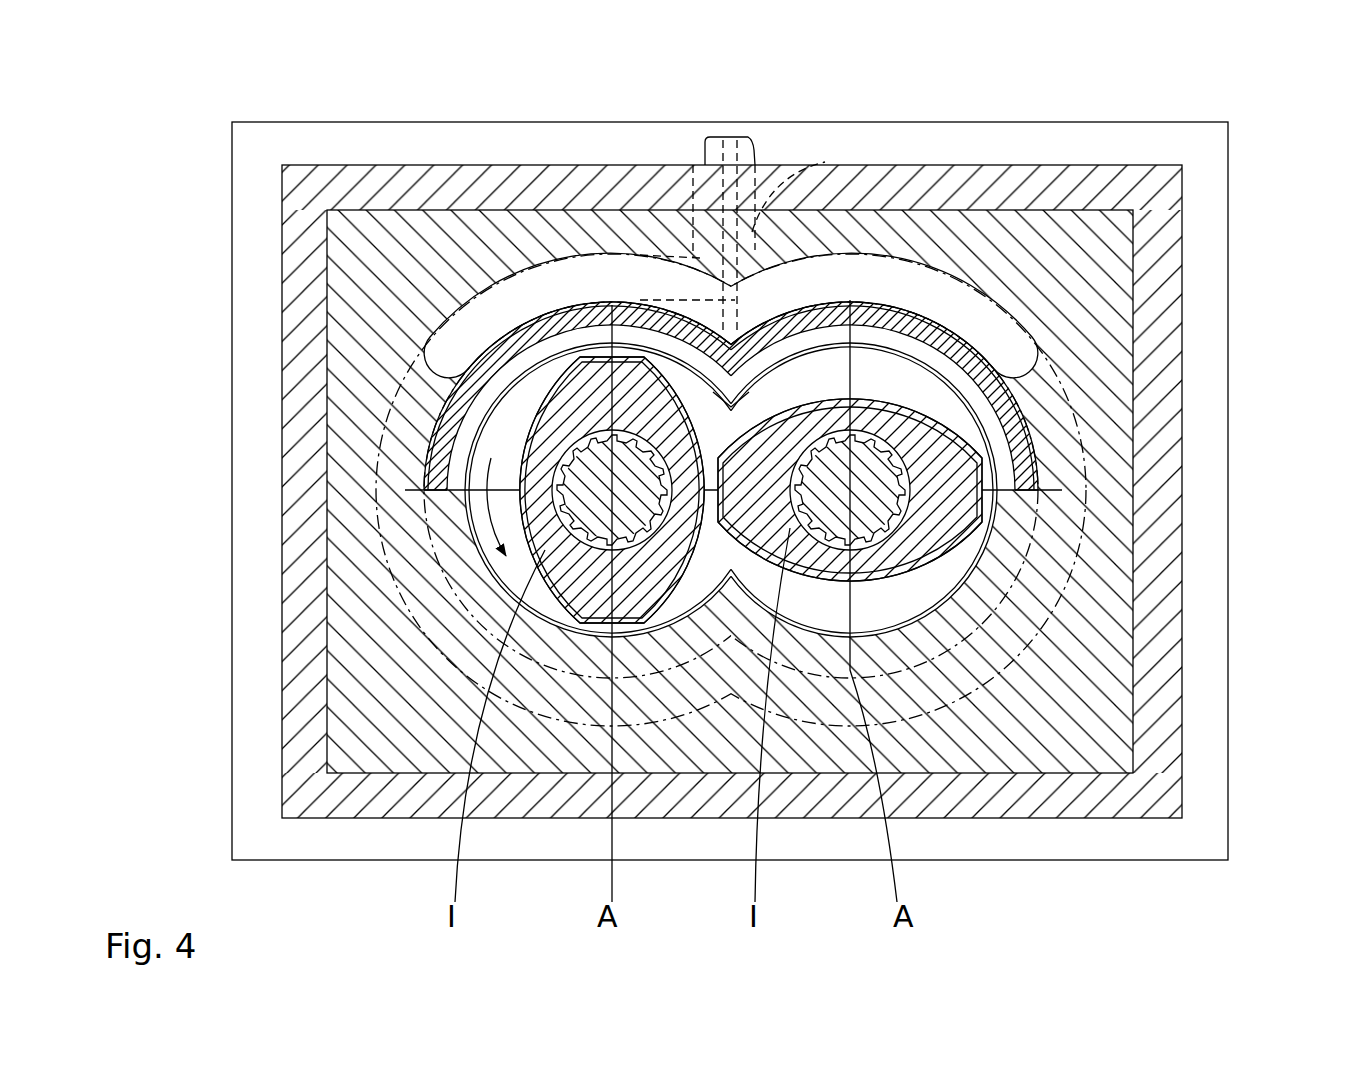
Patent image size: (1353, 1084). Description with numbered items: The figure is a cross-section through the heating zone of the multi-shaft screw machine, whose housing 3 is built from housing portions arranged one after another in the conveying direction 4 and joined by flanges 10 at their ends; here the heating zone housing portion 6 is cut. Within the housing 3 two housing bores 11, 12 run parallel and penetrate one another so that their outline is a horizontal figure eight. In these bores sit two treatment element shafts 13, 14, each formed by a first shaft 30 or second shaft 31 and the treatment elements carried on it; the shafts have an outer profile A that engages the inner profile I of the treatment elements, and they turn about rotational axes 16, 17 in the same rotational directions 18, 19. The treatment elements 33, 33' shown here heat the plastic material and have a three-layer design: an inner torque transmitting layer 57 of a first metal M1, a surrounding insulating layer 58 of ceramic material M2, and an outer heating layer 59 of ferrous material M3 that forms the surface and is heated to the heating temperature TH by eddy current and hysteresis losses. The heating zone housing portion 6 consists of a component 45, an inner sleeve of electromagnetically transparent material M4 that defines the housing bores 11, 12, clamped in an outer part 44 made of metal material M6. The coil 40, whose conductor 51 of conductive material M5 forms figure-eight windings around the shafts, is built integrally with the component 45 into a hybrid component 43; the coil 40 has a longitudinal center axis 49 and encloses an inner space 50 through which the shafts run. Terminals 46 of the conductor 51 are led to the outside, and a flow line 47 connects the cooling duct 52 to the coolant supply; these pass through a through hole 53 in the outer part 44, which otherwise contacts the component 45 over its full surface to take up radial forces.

The housing 3 is at (595, 115).
The conveying direction 4 is at (182, 98).
The heating zone housing portion 6 is at (1094, 160).
The flange 10 is at (1148, 133).
The housing bore 11 is at (405, 492).
The housing bore 12 is at (831, 360).
The treatment element shaft 13 is at (551, 378).
The treatment element shaft 14 is at (720, 285).
The rotational axis 16 is at (638, 535).
The rotational axis 17 is at (868, 540).
The rotational direction 18 is at (490, 485).
The rotational direction 19 is at (899, 380).
The first shaft 30 is at (572, 548).
The second shaft 31 is at (836, 532).
The treatment element 33 is at (612, 264).
The treatment element 33' is at (874, 264).
The coil 40 is at (480, 307).
The hybrid component 43 is at (1132, 510).
The outer part 44 is at (1174, 446).
The component 45 is at (1117, 577).
The terminal 46 is at (752, 265).
The flow line 47 is at (800, 187).
The longitudinal center axis 49 is at (735, 492).
The inner space 50 is at (732, 380).
The conductor 51 is at (440, 400).
The cooling duct 52 is at (481, 340).
The through hole 53 is at (769, 408).
The torque transmitting layer 57 is at (583, 525).
The insulating layer 58 is at (600, 555).
The heating layer 59 is at (520, 432).
The first metal material M1 is at (760, 500).
The ceramic material M2 is at (975, 478).
The second metal material M3 is at (945, 445).
The electromagnetically transparent material M4 is at (1125, 378).
The electrically conductive material M5 is at (865, 375).
The metal material M6 is at (348, 802).
The heating temperature TH is at (870, 305).